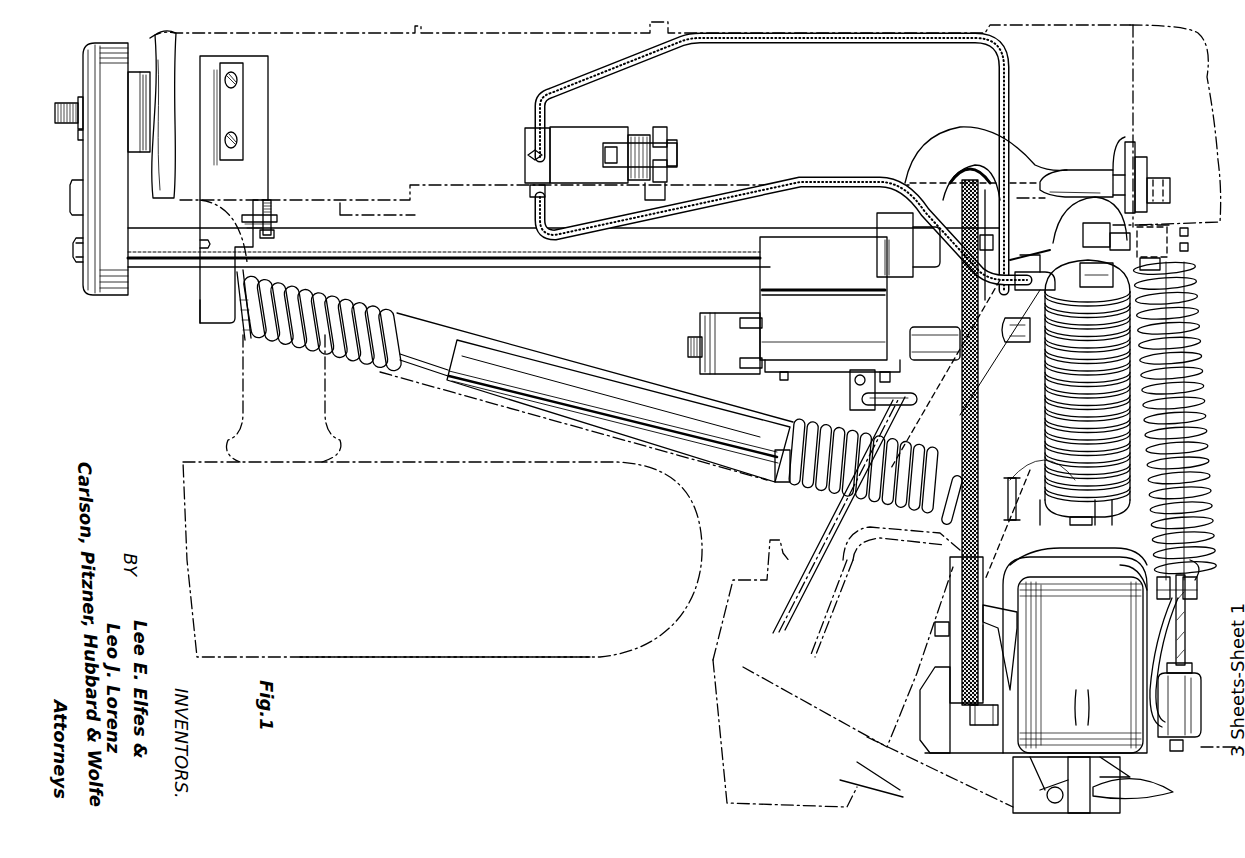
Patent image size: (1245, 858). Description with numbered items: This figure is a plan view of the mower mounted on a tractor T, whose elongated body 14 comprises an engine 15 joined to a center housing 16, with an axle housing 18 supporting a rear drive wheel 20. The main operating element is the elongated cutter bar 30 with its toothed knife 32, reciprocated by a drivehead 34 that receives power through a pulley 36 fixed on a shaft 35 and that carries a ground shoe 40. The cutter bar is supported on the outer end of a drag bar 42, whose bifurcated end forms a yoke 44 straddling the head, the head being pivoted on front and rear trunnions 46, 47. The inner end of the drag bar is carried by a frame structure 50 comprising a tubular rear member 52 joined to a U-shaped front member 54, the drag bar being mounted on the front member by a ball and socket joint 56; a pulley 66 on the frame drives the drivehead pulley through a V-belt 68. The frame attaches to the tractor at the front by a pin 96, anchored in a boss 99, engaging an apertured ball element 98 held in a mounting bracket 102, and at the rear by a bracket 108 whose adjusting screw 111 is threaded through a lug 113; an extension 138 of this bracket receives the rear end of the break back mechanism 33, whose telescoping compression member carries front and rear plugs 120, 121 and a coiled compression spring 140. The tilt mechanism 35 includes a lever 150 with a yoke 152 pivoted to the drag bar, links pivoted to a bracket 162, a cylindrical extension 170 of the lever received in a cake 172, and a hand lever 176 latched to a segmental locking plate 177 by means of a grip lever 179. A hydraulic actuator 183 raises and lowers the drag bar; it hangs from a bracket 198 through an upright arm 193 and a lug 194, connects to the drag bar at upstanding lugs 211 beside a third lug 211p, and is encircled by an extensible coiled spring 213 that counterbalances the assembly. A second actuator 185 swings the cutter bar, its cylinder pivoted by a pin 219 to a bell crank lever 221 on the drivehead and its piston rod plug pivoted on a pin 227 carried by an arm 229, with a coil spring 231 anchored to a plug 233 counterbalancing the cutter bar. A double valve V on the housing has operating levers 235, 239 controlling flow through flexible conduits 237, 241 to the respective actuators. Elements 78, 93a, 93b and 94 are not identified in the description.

The elongated body 14 is at (538, 32).
The engine 15 is at (1207, 75).
The center housing 16 is at (442, 183).
The axle housing 18 is at (245, 388).
The rear drive wheels 20 is at (368, 658).
The tractor T is at (182, 468).
The double valve V is at (597, 126).
The cutter bar 30 is at (1013, 807).
The toothed knife 32 is at (1100, 790).
The break back mechanism 33 is at (712, 470).
The driving head 34 is at (1185, 642).
The tilt mechanism 35 is at (760, 295).
The pulley 36 is at (965, 703).
The ground shoe 40 is at (1203, 750).
The drag bar 42 is at (1000, 392).
The yoke 44 is at (1138, 568).
The front trunnion 46 is at (1140, 645).
The rear trunnion 47 is at (1022, 615).
The frame structure 50 is at (719, 271).
The tubular rear member 52 is at (420, 268).
The U-shaped front member 54 is at (960, 137).
The joint 56 is at (1020, 262).
The pulley 66 is at (958, 195).
The V-belt 68 is at (960, 412).
The plate 78 is at (135, 93).
The bracket 93a is at (88, 150).
The bracket 93b is at (78, 215).
The knob 94 is at (65, 100).
The pin 96 is at (1110, 182).
The apertured element 98 is at (1142, 175).
The boss 99 is at (1100, 172).
The mounting bracket 102 is at (1137, 150).
The bracket 108 is at (270, 150).
The adjusting screw 111 is at (275, 235).
The lug 113 is at (249, 213).
The front plug 120 is at (948, 518).
The rear plug 121 is at (247, 340).
The extension 138 is at (200, 322).
The coiled compression spring 140 is at (316, 358).
The lever 150 is at (932, 310).
The yoke 152 is at (1025, 342).
The bracket 162 is at (887, 288).
The cylindrical extension 170 is at (688, 348).
The cake 172 is at (712, 367).
The hand lever 176 is at (850, 400).
The segmental locking plate 177 is at (768, 372).
The grip lever 179 is at (918, 402).
The hydraulic actuator 183 is at (1200, 270).
The hydraulic actuator 185 is at (1188, 500).
The upright arm 193 is at (1118, 225).
The lug 194 is at (1112, 300).
The bracket 198 is at (1170, 180).
The upstanding lugs 211 is at (1040, 520).
The third lug 211p is at (1022, 480).
The extensible coiled spring 213 is at (1190, 392).
The pin 219 is at (1197, 583).
The bell crank lever 221 is at (1180, 615).
The pin 227 is at (1188, 247).
The arm 229 is at (1188, 230).
The extensible coil spring 231 is at (1190, 545).
The plug 233 is at (1143, 590).
The operating lever 235 is at (670, 173).
The flexible conduit 237 is at (823, 183).
The second valve operating lever 239 is at (660, 128).
The flexible conduit 241 is at (772, 164).